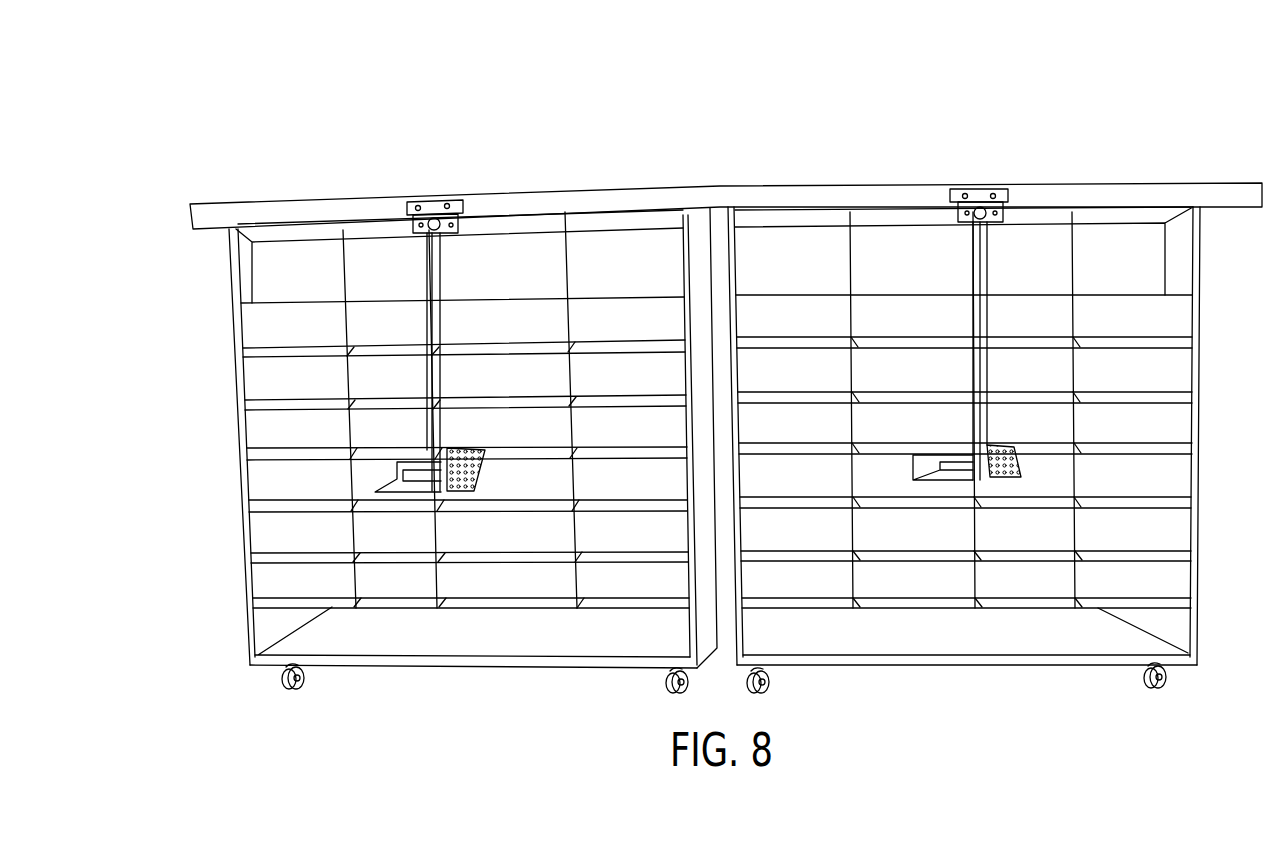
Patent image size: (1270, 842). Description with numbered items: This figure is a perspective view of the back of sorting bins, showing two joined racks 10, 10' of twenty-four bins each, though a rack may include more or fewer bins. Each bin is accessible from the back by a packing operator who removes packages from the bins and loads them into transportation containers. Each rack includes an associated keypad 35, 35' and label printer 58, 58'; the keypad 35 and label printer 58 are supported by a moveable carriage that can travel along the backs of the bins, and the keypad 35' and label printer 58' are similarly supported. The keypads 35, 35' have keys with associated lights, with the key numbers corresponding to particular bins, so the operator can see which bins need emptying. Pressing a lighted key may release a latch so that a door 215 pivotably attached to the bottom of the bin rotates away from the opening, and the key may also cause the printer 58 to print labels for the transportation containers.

The mobile storage cabinet 10 is at (423, 371).
The second mobile storage cabinet 10' is at (964, 371).
The door 215 is at (257, 378).
The keypad 35 is at (473, 364).
The label printer 58 is at (408, 505).
The keypad 35' is at (1018, 355).
The label printer 58' is at (943, 499).